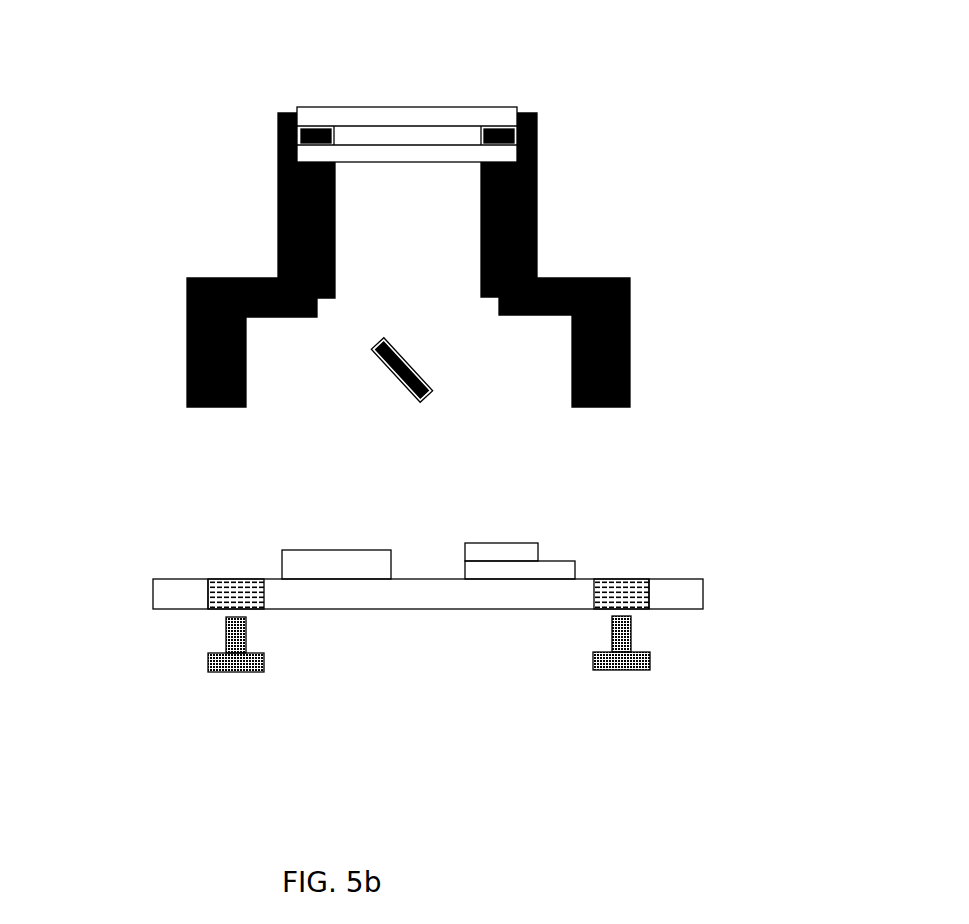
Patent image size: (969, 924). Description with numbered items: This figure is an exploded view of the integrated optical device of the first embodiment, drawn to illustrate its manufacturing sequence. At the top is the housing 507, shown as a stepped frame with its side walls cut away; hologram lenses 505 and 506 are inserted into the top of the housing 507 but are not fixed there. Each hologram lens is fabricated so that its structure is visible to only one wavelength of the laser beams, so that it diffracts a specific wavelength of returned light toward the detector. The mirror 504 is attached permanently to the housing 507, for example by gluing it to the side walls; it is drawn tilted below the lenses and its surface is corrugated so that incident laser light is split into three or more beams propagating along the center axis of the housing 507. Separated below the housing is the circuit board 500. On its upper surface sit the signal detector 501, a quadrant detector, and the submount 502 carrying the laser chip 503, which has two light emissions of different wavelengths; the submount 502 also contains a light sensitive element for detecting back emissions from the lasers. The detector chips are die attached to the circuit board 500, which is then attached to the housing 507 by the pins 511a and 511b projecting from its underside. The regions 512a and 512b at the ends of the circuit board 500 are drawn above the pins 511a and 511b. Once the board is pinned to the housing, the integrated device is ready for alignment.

The circuit board 500 is at (373, 580).
The signal detector 501 is at (353, 562).
The submount 502 is at (485, 543).
The laser chip 503 is at (542, 561).
The mirror 504 is at (370, 348).
The hologram lens 505 is at (350, 108).
The hologram lens 506 is at (465, 143).
The housing 507 is at (612, 277).
The pin 511a is at (225, 672).
The pin 511b is at (651, 642).
The left contact pad 512a is at (228, 599).
The right contact pad 512b is at (615, 595).